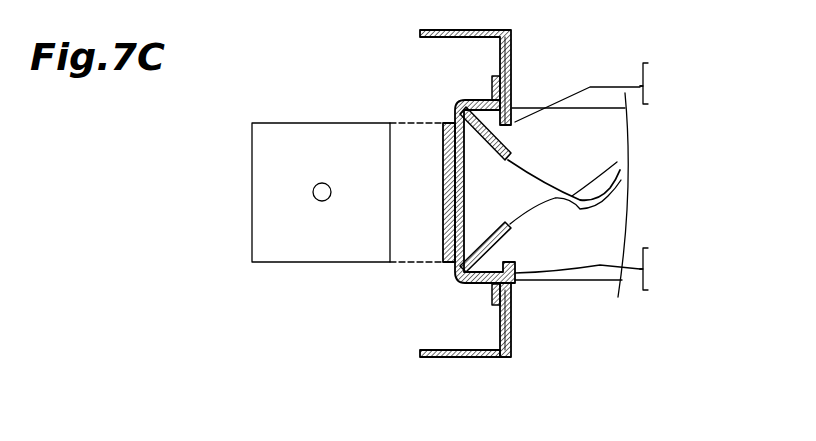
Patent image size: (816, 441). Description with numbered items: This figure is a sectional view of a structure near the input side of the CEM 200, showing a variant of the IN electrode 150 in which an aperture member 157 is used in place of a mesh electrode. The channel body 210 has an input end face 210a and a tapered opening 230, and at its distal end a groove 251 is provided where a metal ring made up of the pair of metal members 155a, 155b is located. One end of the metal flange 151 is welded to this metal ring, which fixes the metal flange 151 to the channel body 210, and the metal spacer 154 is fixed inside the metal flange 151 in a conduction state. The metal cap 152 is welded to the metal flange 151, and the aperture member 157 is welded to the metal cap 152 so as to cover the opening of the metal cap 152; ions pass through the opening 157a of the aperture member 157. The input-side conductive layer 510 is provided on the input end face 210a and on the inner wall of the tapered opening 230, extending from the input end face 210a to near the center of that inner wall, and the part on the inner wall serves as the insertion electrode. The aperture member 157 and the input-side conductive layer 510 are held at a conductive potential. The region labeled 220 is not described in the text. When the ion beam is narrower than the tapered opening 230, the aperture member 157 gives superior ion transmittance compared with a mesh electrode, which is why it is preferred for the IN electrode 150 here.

The IN electrode 150 is at (424, 54).
The metal flange 151 is at (473, 355).
The metal cap 152 is at (477, 287).
The metal spacer 154 is at (510, 344).
The aperture member 157 is at (448, 121).
The opening 157a is at (443, 200).
The CEM 200 is at (610, 52).
The channel body 210 is at (597, 151).
The input end face 210a is at (512, 48).
The engaging piece 220 is at (621, 167).
The tapered opening 230 is at (525, 193).
The groove 251 is at (517, 94).
The input-side conductive layer 510 is at (509, 223).
The metal member 155a is at (606, 176).
The metal member 155b is at (669, 187).